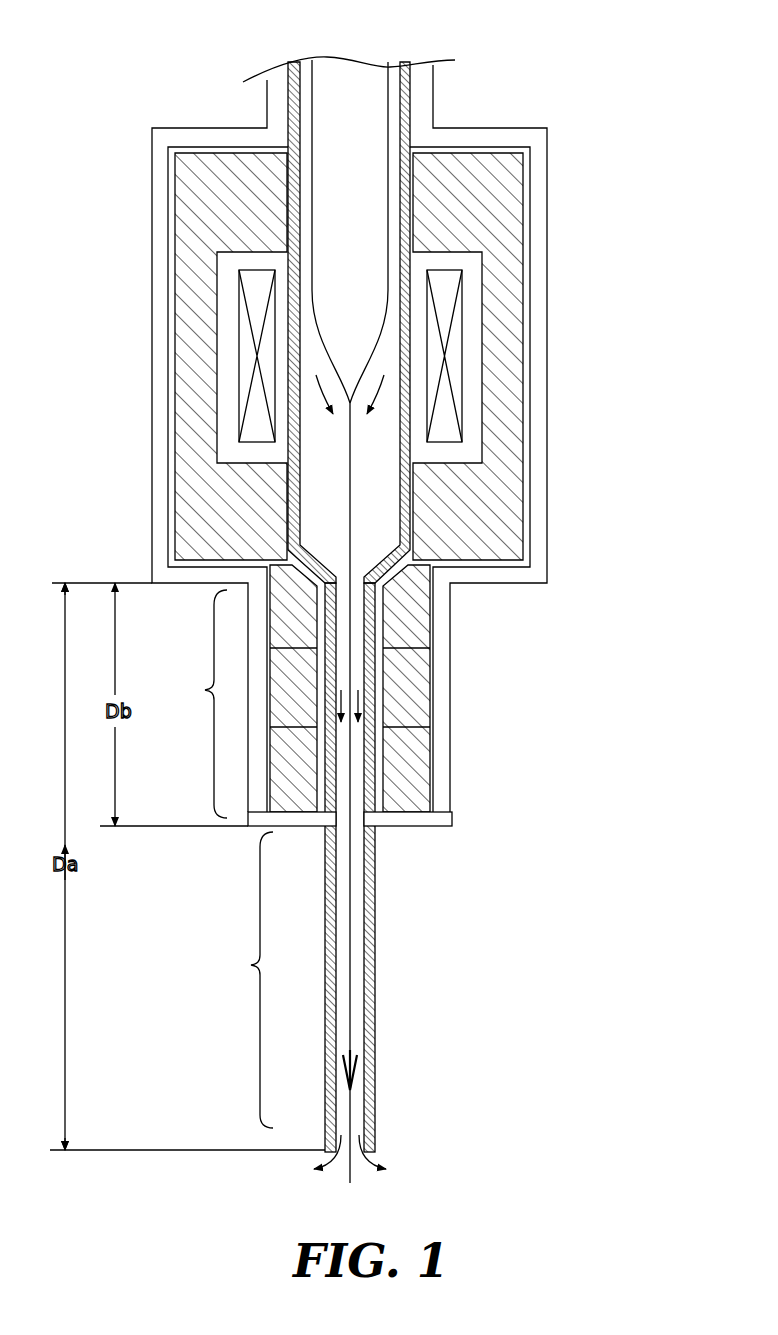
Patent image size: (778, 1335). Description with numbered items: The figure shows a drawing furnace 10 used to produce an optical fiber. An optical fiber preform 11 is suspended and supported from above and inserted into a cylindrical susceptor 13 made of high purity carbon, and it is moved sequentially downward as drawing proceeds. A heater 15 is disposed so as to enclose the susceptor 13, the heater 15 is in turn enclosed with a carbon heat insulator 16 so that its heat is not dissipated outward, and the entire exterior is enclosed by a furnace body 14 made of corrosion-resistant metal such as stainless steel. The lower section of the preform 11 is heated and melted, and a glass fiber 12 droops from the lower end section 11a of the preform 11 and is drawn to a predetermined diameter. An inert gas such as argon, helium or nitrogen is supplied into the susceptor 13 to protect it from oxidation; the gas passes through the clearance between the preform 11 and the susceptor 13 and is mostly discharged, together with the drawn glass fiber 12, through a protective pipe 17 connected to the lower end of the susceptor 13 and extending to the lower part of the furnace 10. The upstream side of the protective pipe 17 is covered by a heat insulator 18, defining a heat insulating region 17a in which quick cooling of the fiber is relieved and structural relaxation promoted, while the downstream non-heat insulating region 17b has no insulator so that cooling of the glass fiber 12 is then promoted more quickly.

The drawing furnace 10 is at (221, 104).
The optical fiber preform 11 is at (337, 113).
The lower end section of the preform 11a is at (382, 347).
The glass fiber 12 is at (350, 890).
The susceptor 13 is at (410, 116).
The furnace body 14 is at (537, 502).
The heater 15 is at (447, 408).
The heat insulator 16 is at (510, 222).
The protective pipe 17 is at (382, 722).
The heat insulating region 17a is at (204, 690).
The non-heat insulating region 17b is at (250, 965).
The heat insulator 18 is at (415, 675).